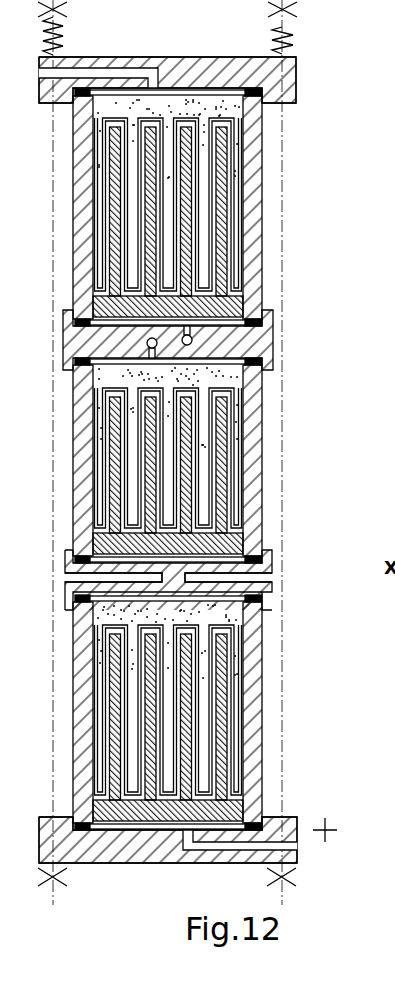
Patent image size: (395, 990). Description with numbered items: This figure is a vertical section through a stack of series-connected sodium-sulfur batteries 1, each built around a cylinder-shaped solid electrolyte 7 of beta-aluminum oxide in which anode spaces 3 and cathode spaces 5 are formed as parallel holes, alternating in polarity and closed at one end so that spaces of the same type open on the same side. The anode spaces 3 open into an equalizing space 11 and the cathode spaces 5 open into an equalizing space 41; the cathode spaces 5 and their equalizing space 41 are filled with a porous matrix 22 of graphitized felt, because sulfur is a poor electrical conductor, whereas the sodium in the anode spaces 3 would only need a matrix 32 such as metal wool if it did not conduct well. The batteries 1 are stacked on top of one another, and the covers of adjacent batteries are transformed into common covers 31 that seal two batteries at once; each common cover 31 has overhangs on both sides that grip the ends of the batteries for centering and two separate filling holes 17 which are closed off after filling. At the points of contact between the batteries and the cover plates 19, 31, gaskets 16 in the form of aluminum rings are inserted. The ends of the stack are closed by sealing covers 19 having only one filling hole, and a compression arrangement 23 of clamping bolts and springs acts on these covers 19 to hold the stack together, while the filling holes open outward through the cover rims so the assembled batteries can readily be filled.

The electrochemical cell 1 is at (204, 419).
The anode space 3 is at (238, 181).
The cathode space 5 is at (221, 267).
The solid electrolyte 7 is at (263, 492).
The equalizing space 11 is at (172, 96).
The gasket 16 is at (296, 80).
The filling hole 17 is at (115, 72).
The cover 19 is at (203, 63).
The porous matrix 22 is at (238, 807).
The compression arrangement 23 is at (293, 27).
The common cover 31 is at (276, 557).
The matrix 32 is at (232, 104).
The equalizing space 41 is at (232, 306).